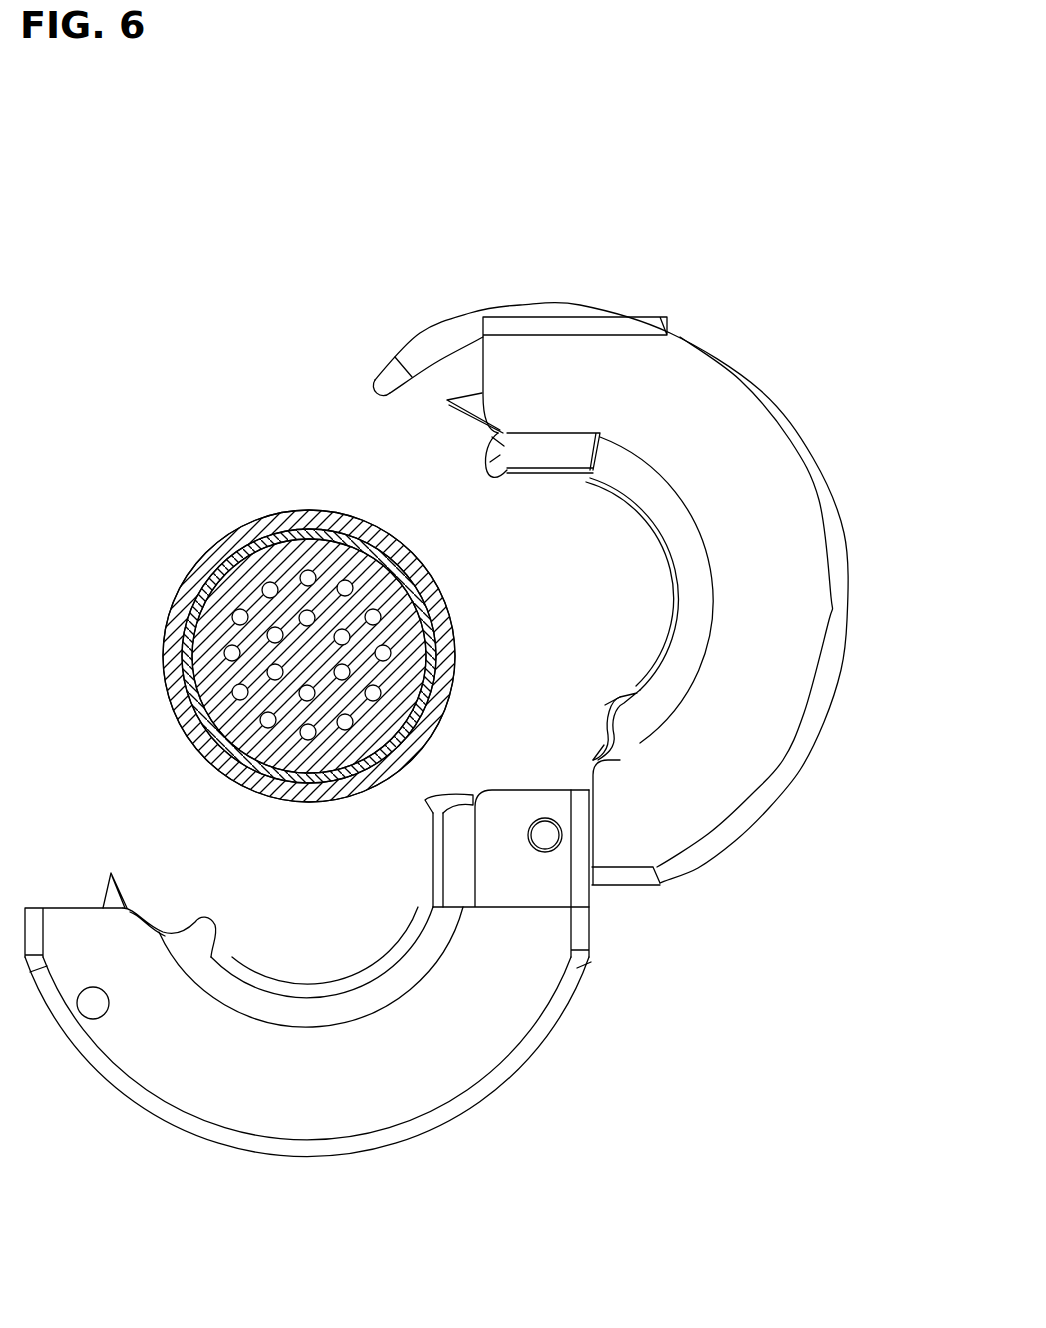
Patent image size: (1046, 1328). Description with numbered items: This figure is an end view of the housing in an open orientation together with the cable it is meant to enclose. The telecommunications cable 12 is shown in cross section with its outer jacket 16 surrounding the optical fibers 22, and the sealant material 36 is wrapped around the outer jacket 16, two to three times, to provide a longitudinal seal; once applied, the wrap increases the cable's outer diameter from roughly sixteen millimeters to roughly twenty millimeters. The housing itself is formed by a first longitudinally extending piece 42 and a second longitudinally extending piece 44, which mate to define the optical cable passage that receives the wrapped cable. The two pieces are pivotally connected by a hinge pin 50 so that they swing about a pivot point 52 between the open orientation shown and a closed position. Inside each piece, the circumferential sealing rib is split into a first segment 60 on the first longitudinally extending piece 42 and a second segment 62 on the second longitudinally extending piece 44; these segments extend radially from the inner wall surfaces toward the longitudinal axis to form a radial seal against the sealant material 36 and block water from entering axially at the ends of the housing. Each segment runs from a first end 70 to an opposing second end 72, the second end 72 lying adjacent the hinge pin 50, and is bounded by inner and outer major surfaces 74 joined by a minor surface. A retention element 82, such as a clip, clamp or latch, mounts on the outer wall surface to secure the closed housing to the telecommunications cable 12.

The telecommunications cable 12 is at (230, 487).
The outer jacket 16 is at (395, 572).
The optical fibers 22 is at (240, 615).
The sealant material 36 is at (165, 640).
The first longitudinally extending piece 42 is at (796, 382).
The second longitudinally extending piece 44 is at (411, 1163).
The hinge pin 50 is at (552, 845).
The pivot point 52 is at (583, 827).
The first segment 60 is at (714, 572).
The second segment 62 is at (299, 1027).
The first end 70 is at (453, 438).
The second end 72 is at (575, 743).
The inner and outer major surfaces 74 is at (497, 478).
The retention elements 82 is at (415, 338).